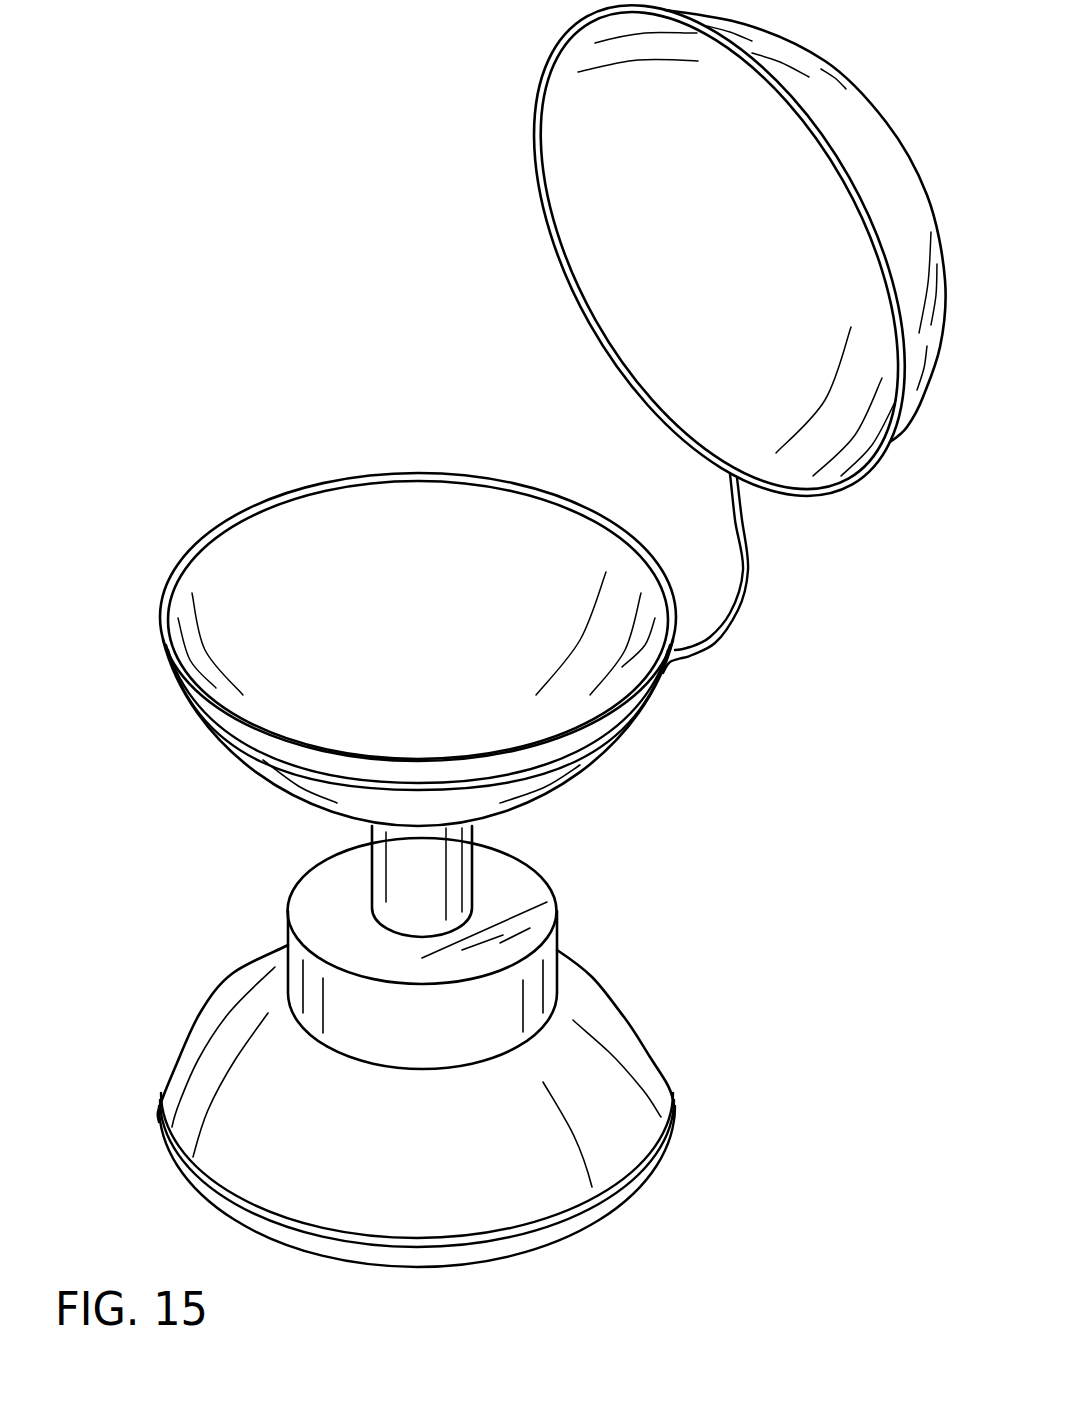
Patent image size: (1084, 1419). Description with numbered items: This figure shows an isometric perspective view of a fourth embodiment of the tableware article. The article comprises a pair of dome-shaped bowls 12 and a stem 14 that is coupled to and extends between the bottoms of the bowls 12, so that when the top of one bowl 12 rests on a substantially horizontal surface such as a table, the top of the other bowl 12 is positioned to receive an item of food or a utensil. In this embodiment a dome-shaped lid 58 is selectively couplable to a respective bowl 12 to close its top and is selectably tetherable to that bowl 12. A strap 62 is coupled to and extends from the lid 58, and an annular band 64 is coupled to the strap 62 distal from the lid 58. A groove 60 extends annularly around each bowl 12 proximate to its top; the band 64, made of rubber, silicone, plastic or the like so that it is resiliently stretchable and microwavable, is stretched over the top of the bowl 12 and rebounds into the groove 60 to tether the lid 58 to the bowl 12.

The bowl 12 is at (302, 802).
The stem 14 is at (436, 863).
The lid 58 is at (648, 211).
The groove 60 is at (262, 760).
The strap 62 is at (743, 582).
The band 64 is at (232, 743).